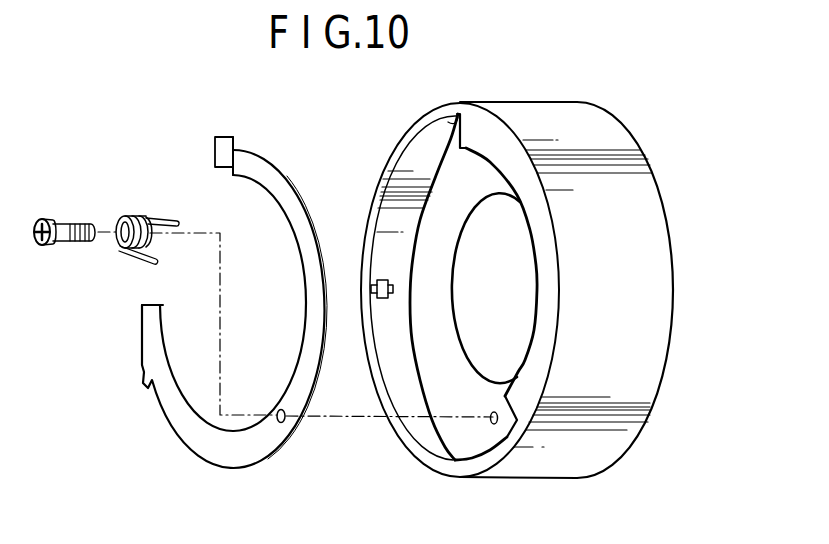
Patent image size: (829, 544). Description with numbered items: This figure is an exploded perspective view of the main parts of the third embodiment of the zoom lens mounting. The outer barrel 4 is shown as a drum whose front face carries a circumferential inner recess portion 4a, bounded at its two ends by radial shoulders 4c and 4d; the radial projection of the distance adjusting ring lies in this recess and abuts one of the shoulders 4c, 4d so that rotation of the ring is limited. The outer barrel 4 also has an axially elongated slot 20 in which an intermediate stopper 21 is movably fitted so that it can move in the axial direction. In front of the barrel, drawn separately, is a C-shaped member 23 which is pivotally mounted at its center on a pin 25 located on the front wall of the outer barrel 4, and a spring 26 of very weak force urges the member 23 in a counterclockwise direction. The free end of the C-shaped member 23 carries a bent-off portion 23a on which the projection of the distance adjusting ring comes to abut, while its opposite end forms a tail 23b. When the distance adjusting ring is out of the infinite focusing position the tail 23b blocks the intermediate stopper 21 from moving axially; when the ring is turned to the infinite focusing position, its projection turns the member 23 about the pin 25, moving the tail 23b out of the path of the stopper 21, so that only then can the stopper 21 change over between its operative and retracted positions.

The outer barrel 4 is at (555, 108).
The circumferential inner recess portion 4a is at (410, 150).
The radial shoulder 4c is at (453, 116).
The radial shoulder 4d is at (506, 423).
The axially elongated slot 20 is at (372, 292).
The intermediate stopper 21 is at (372, 286).
The C-shaped member 23 is at (286, 188).
The bent-off portion 23a is at (237, 147).
The tail 23b is at (147, 303).
The pin 25 is at (63, 243).
The spring 26 is at (147, 215).